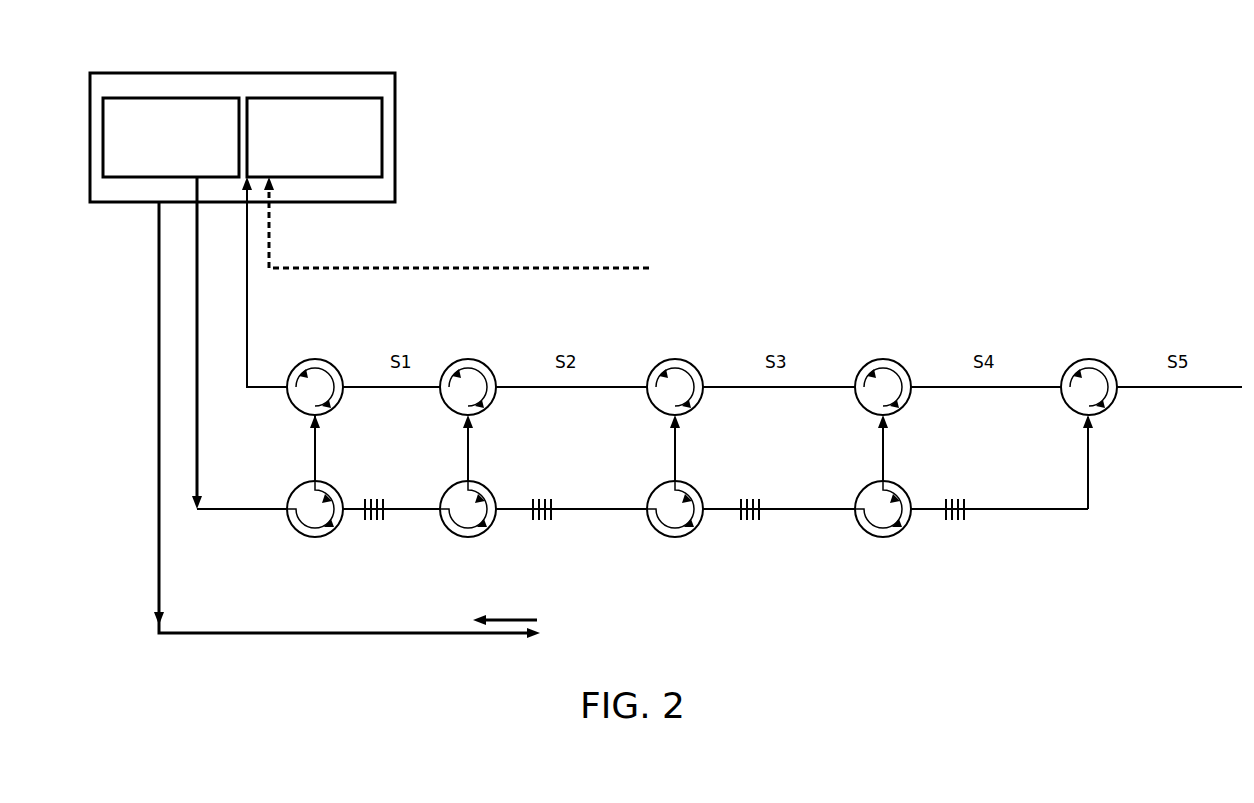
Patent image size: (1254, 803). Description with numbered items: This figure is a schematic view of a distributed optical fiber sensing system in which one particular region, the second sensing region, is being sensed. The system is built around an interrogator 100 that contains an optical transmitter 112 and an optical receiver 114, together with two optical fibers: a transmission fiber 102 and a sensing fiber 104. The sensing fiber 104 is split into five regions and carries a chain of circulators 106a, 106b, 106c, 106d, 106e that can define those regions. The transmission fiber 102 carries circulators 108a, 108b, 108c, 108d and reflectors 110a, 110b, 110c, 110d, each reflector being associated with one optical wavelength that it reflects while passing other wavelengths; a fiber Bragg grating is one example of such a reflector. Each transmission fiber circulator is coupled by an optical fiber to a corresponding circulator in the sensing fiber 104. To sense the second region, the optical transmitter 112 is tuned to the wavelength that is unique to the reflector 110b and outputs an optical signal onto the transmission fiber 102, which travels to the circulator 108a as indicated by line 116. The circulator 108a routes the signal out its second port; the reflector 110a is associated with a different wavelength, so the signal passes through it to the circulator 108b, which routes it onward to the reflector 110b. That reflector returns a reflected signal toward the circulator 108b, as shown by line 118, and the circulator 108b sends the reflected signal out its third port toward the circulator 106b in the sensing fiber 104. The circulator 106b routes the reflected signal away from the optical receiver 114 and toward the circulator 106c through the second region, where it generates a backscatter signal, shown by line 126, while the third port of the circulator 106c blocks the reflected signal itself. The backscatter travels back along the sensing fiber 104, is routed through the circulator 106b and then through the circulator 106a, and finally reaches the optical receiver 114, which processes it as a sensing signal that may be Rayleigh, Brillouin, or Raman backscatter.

The interrogator 100 is at (340, 73).
The transmission fiber 102 is at (198, 365).
The sensing fiber 104 is at (247, 321).
The circulator 106a is at (340, 366).
The circulator 106b is at (466, 362).
The circulator 106c is at (682, 360).
The circulator 106d is at (890, 360).
The circulator 106e is at (1091, 360).
The circulator 108a is at (318, 538).
The circulator 108b is at (465, 538).
The circulator 108c is at (672, 537).
The circulator 108d is at (883, 537).
The reflector 110a is at (383, 520).
The reflector 110b is at (551, 520).
The reflector 110c is at (760, 520).
The reflector 110d is at (965, 520).
The optical transmitter 112 is at (140, 98).
The optical receiver 114 is at (382, 139).
The line 116 is at (384, 640).
The line 118 is at (545, 617).
The line 126 is at (510, 268).